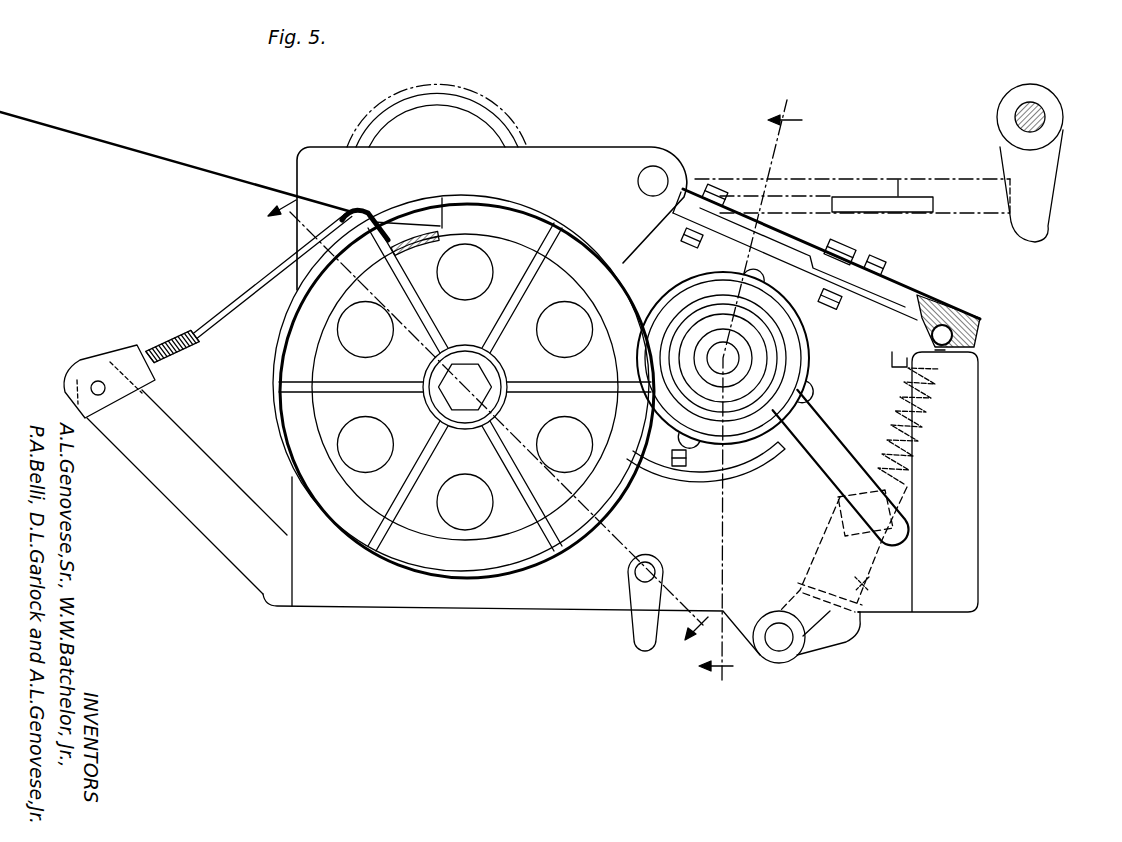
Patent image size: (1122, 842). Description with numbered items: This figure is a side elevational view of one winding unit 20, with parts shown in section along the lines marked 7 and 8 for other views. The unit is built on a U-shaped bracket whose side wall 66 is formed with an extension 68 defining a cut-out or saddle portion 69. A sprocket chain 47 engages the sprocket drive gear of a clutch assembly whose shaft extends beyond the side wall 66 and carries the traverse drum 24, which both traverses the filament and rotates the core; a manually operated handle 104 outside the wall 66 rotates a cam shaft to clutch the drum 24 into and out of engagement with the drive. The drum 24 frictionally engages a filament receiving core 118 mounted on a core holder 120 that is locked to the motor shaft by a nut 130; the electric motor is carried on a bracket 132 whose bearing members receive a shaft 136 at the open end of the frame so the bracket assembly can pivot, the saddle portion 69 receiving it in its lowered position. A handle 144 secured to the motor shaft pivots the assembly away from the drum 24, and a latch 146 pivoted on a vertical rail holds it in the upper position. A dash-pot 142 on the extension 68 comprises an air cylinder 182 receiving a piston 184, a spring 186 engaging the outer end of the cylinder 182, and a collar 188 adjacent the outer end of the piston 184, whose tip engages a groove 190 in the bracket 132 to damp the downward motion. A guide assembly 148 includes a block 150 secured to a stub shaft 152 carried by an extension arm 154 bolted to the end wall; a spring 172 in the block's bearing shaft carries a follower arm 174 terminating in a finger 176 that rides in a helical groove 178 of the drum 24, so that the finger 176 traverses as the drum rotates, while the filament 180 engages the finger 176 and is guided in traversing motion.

The section line 7- 7 is at (751, 394).
The section line 8- 8 is at (479, 431).
The winding unit 20 is at (703, 173).
The traverse drum 24 is at (466, 610).
The sprocket chain 47 is at (474, 104).
The side wall 66 is at (572, 158).
The extension 68 is at (950, 578).
The saddle portion 69 is at (706, 466).
The manually operated handle 104 is at (640, 616).
The filament receiving core 118 is at (780, 342).
The core holder 120 is at (767, 362).
The nut 130 is at (692, 360).
The bracket 132 is at (905, 293).
The shaft 136 is at (656, 172).
The dash-pot 142 is at (817, 554).
The handle 144 is at (822, 470).
The latch 146 is at (1036, 222).
The guide assembly 148 is at (113, 348).
The block 150 is at (78, 376).
The stub shaft 152 is at (92, 393).
The extension arm 154 is at (197, 503).
The spring 172 is at (178, 331).
The follower arm 174 is at (250, 280).
The finger 176 is at (372, 218).
The helical groove 178 is at (438, 235).
The filament 180 is at (160, 154).
The air cylinder 182 is at (862, 580).
The piston 184 is at (886, 447).
The spring 186 is at (892, 358).
The collar 188 is at (978, 354).
The groove 190 is at (962, 328).